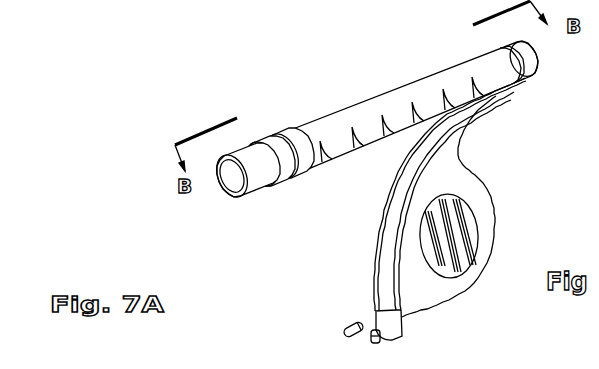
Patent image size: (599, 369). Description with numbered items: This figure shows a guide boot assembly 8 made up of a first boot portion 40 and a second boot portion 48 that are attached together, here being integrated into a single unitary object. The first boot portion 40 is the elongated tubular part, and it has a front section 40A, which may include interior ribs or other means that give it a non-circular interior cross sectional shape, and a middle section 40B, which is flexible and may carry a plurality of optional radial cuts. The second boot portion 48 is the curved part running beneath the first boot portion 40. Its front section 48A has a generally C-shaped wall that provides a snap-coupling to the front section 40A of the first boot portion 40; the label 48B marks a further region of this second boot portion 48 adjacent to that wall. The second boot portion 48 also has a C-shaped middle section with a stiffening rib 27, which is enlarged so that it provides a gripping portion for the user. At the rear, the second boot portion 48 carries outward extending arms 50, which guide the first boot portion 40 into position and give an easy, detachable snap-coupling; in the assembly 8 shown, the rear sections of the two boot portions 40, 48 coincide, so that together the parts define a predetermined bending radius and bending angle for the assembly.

The guide boot assembly 8 is at (185, 103).
The first boot portion 40 is at (363, 100).
The front section 40A is at (263, 148).
The middle section 40B is at (425, 90).
The second boot portion 48 is at (375, 234).
The front section 48A is at (445, 303).
The arm upper portion 48B is at (463, 163).
The stiffening rib 27 is at (478, 203).
The outward extending arms 50 is at (393, 327).